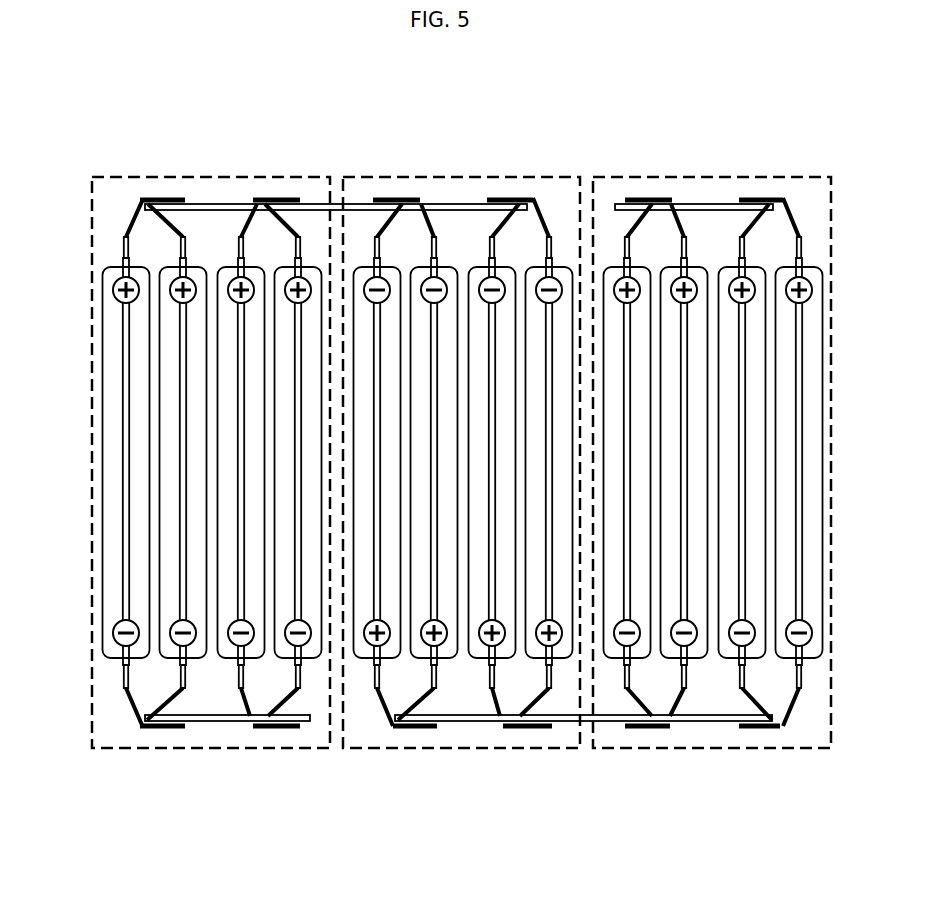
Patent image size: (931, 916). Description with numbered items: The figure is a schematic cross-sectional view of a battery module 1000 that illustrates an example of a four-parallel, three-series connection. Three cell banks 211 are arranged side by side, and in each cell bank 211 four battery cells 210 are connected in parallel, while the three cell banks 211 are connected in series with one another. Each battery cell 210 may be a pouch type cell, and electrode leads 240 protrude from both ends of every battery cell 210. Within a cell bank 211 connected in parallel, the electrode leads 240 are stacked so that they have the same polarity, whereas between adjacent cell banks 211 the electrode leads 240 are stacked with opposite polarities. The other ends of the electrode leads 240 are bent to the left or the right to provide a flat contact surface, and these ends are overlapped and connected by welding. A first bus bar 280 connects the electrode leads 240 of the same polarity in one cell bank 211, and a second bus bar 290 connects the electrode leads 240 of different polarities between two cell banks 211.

The battery module 1000 is at (577, 122).
The cell bank 211 is at (210, 176).
The battery cell 210 is at (103, 287).
The electrode lead 240 is at (131, 219).
The first bus bar 280 is at (687, 195).
The second bus bar 290 is at (465, 735).